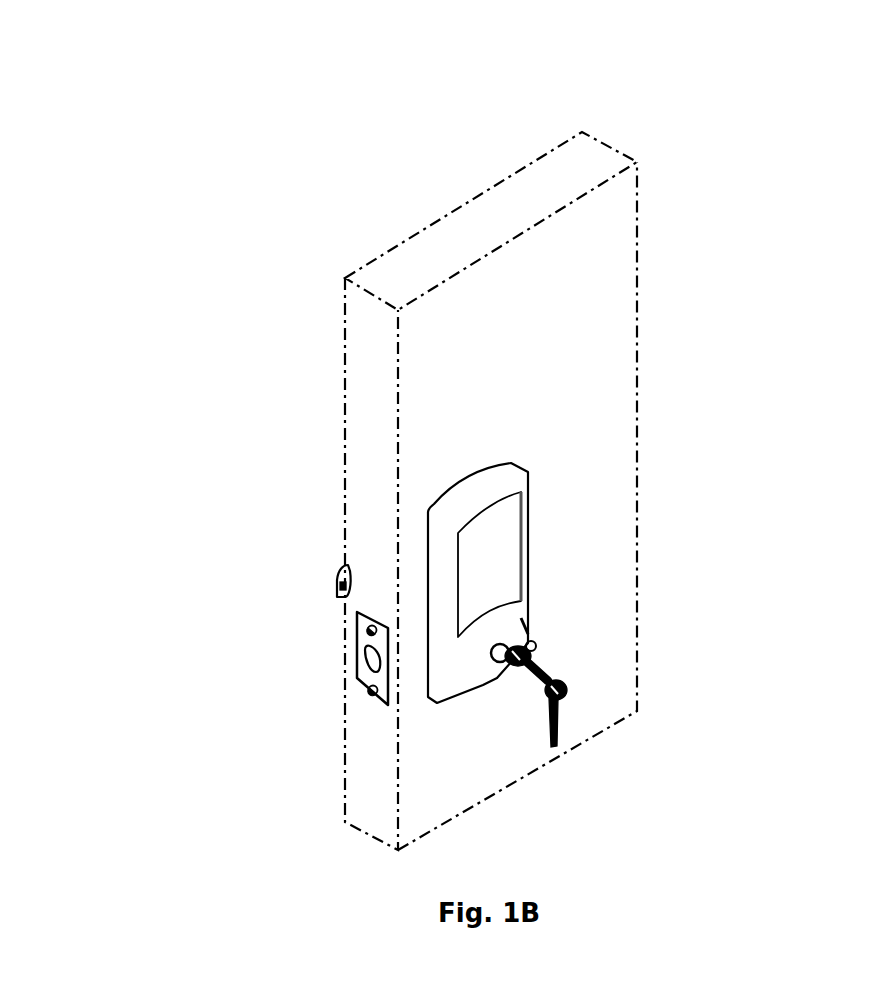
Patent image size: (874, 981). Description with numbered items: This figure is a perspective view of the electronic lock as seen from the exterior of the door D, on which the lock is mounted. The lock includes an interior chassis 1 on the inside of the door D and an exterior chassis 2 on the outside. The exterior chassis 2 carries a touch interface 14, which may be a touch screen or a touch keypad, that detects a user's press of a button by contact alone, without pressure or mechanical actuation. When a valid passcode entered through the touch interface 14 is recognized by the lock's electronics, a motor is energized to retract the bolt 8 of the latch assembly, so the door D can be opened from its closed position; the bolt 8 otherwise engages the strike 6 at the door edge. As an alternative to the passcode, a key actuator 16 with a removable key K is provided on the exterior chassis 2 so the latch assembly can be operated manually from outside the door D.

The door D is at (467, 222).
The interior chassis 1 is at (290, 507).
The exterior chassis 2 is at (557, 446).
The strike 6 is at (365, 688).
The bolt 8 is at (360, 650).
The touch interface 14 is at (544, 556).
The key actuator 16 is at (557, 645).
The key K is at (545, 672).